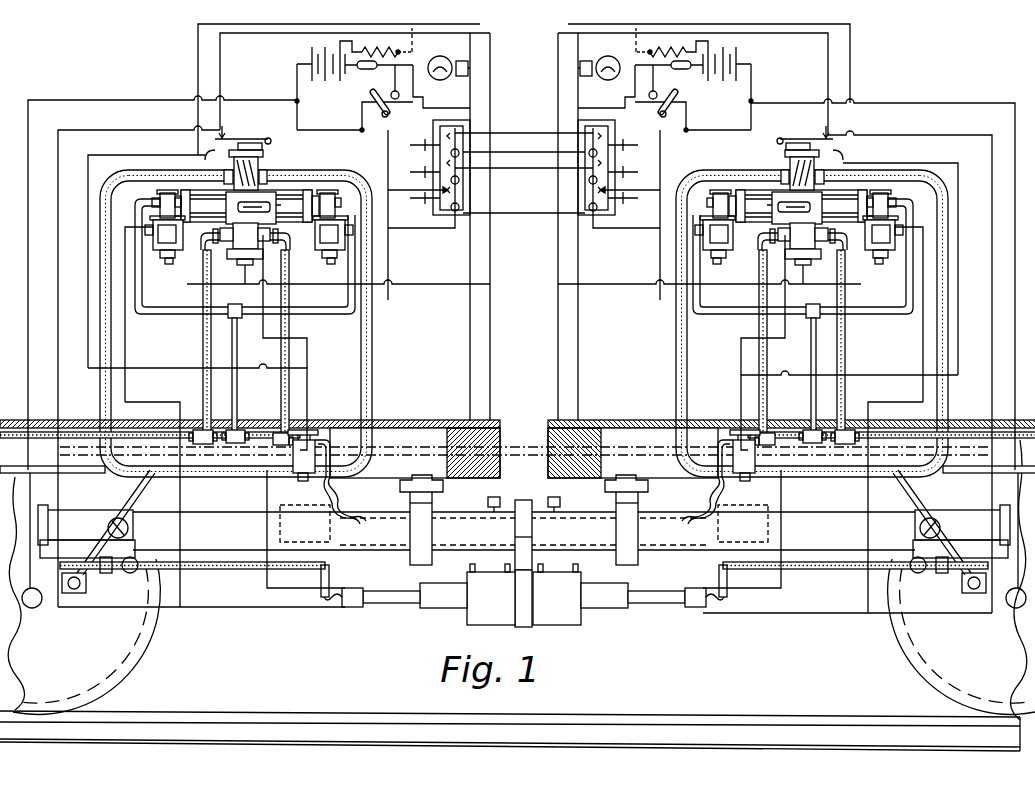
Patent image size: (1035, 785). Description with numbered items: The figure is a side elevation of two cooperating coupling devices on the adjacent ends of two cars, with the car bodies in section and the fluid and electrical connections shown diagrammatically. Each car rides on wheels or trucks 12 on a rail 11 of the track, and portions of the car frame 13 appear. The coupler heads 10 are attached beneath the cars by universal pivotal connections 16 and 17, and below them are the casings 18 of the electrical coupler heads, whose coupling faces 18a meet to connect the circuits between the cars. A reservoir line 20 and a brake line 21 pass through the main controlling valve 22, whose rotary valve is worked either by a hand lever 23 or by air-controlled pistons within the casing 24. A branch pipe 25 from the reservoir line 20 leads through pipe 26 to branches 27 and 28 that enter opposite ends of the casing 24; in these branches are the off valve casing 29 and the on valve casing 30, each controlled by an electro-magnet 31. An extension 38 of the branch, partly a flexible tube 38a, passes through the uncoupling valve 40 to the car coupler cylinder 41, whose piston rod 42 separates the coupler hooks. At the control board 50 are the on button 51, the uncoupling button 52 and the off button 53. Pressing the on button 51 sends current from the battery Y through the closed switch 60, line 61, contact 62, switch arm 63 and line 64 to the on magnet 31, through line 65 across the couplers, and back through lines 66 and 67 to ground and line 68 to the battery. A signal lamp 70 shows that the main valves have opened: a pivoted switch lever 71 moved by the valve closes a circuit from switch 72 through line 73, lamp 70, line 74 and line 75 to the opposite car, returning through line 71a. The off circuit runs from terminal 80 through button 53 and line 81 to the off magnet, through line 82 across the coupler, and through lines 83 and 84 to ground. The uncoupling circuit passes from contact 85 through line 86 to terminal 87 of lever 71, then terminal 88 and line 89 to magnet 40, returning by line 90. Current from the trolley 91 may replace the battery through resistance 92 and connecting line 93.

The coupler head 10 is at (490, 512).
The rail 11 is at (652, 718).
The wheels or trucks 12 is at (897, 640).
The car frame 13 is at (490, 294).
The universal pivotal connection 16 is at (125, 520).
The swivel connection 17 is at (40, 525).
The electrical coupler casing 18 is at (524, 594).
The coupling face 18a is at (525, 628).
The reservoir line 20 is at (203, 346).
The brake line 21 is at (160, 171).
The main controlling valve 22 is at (265, 172).
The hand lever 23 is at (277, 222).
The casing 24 is at (920, 210).
The branch pipe 25 is at (208, 428).
The pipe 26 is at (233, 362).
The branch pipe 27 is at (325, 311).
The branch pipe 28 is at (880, 311).
The off valve casing 29 is at (338, 203).
The on valve casing 30 is at (160, 200).
The electro-magnet casing 31 is at (175, 263).
The branch line 38 is at (245, 431).
The flexible tube 38a is at (342, 500).
The uncoupling valve 40 is at (295, 476).
The car coupler cylinder 41 is at (305, 512).
The piston rod 42 is at (515, 536).
The control board 50 is at (524, 153).
The on button 51 is at (524, 145).
The uncoupling button 52 is at (524, 172).
The off button 53 is at (524, 198).
The switch 60 is at (366, 70).
The line 61 is at (470, 92).
The contact 62 is at (524, 132).
The switch arm 63 is at (524, 171).
The line 64 is at (245, 267).
The line 65 is at (127, 330).
The line 66 is at (325, 130).
The line 67 is at (234, 100).
The short line 68 is at (297, 66).
The signal light 70 is at (440, 56).
The switch lever 71 is at (228, 138).
The line 71a is at (372, 100).
The switch 72 is at (690, 108).
The line 73 is at (413, 106).
The line 74 is at (198, 63).
The line 75 is at (125, 130).
The off switch terminal 80 is at (524, 213).
The line 81 is at (435, 230).
The line 82 is at (307, 338).
The line 83 is at (516, 184).
The line 84 is at (388, 152).
The contact 85 is at (524, 156).
The line 86 is at (196, 30).
The terminal 87 is at (855, 153).
The terminal 88 is at (222, 150).
The line 89 is at (165, 155).
The contact 90 is at (662, 350).
The trolley 91 is at (360, 52).
The resistance 92 is at (524, 44).
The connecting line 93 is at (524, 31).
The battery Y is at (312, 56).